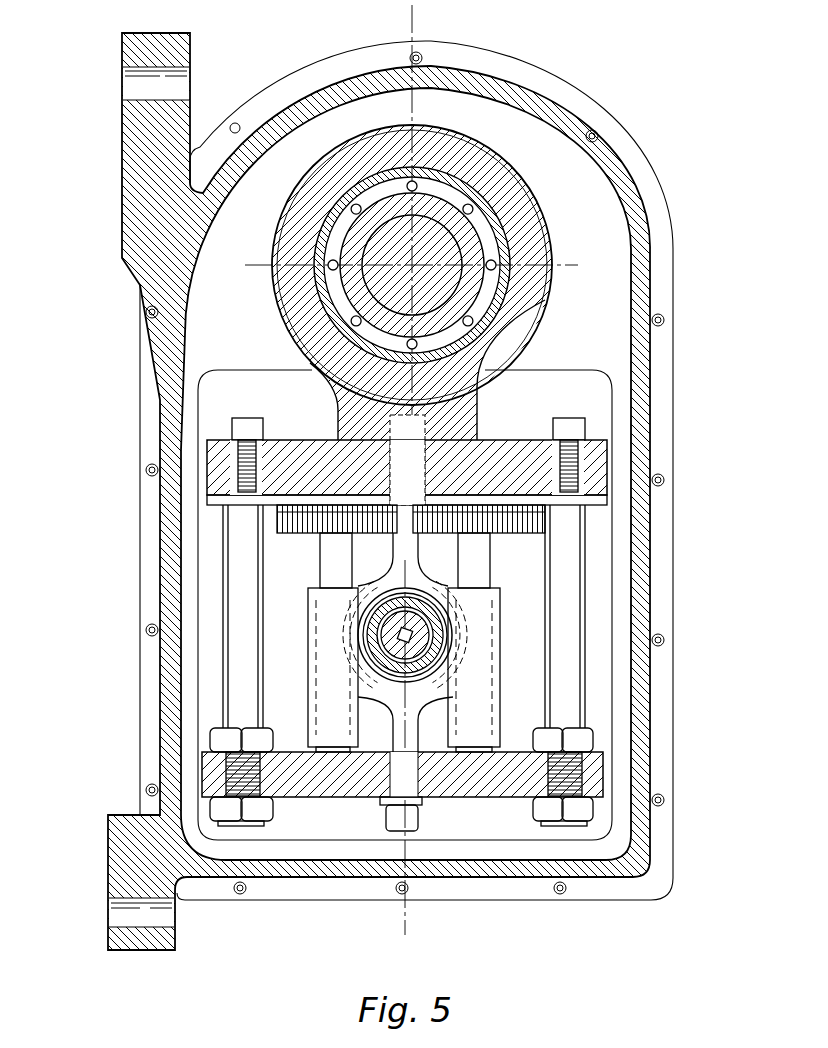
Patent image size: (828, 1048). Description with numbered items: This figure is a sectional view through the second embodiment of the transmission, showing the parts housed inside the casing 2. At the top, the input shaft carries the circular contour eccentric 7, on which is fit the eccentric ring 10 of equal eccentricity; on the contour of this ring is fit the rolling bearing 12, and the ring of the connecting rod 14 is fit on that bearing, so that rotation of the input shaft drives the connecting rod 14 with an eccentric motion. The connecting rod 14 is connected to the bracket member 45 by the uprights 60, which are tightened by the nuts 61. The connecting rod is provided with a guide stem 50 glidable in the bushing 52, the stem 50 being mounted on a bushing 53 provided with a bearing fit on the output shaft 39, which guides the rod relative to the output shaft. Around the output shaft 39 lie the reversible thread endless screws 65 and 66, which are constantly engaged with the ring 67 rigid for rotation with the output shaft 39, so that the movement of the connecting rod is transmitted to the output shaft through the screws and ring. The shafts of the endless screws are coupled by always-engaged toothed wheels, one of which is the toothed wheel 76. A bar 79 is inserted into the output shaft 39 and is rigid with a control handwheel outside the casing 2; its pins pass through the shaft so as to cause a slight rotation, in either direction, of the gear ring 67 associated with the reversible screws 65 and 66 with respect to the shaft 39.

The casing 2 is at (640, 246).
The eccentric 7 is at (463, 248).
The eccentric ring 10 is at (433, 195).
The rolling bearing 12 is at (477, 203).
The connecting rod 14 is at (478, 407).
The output shaft 39 is at (427, 643).
The bracket member 45 is at (313, 778).
The guide stem 50 is at (425, 548).
The bushing 52 is at (418, 806).
The bushing 53 is at (355, 690).
The upright 60 is at (235, 560).
The nut 61 is at (222, 806).
The reversible thread endless screw 65 is at (498, 604).
The reversible thread endless screw 66 is at (312, 605).
The ring 67 is at (420, 670).
The toothed wheel 76 is at (290, 522).
The bar 79 is at (440, 650).